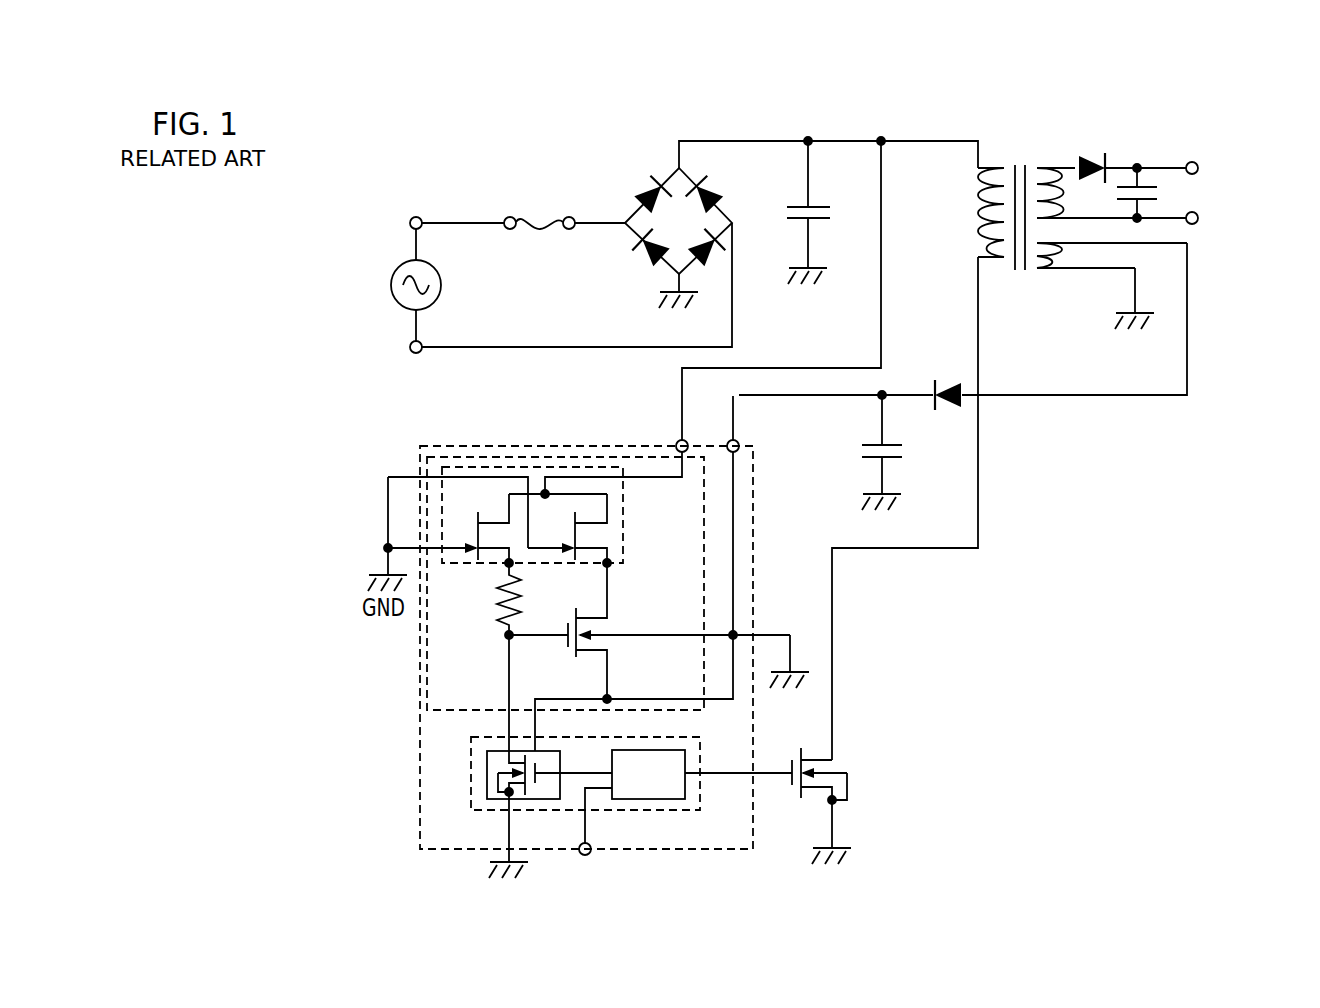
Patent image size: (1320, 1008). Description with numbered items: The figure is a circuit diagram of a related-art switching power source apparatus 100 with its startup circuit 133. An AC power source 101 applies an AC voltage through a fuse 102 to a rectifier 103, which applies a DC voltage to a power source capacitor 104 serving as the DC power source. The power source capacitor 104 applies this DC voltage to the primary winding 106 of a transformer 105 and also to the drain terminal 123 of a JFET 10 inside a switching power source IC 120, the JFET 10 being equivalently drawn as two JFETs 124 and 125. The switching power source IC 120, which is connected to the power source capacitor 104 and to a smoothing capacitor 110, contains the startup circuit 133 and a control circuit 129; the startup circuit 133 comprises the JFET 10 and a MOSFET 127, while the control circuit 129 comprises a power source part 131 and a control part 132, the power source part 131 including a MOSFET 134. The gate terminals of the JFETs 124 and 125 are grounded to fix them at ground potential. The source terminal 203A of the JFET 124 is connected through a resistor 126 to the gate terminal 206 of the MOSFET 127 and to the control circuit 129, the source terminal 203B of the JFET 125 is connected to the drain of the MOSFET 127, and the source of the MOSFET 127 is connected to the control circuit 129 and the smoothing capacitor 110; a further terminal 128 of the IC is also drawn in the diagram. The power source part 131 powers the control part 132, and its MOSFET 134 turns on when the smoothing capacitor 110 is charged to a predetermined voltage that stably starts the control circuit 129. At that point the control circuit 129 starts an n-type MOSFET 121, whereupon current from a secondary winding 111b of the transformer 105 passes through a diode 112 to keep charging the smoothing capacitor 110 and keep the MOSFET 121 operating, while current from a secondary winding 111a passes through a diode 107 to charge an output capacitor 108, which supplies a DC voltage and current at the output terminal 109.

The switching power source apparatus 100 is at (410, 167).
The AC power source 101 is at (442, 279).
The fuse 102 is at (534, 216).
The rectifier 103 is at (640, 185).
The power source capacitor 104 is at (818, 207).
The transformer 105 is at (1012, 165).
The primary winding 106 is at (986, 230).
The diode 107 is at (1090, 160).
The output capacitor 108 is at (1150, 186).
The output terminal 109 is at (1199, 168).
The smoothing capacitor 110 is at (893, 460).
The secondary winding 111a is at (1045, 165).
The secondary winding 111b is at (1045, 270).
The diode 112 is at (948, 382).
The switching power source IC 120 is at (419, 812).
The n-type MOSFET 121 is at (836, 765).
The drain terminal 123 is at (676, 441).
The JFET 124 is at (468, 536).
The JFET 125 is at (595, 528).
The resistor 126 is at (521, 600).
The MOSFET 127 is at (614, 633).
The power supply terminal 128 is at (741, 441).
The control circuit 129 is at (470, 752).
The power source part 131 is at (566, 760).
The control part 132 is at (686, 760).
The startup circuit 133 is at (492, 455).
The MOSFET 134 is at (527, 790).
The source terminal 203A is at (506, 566).
The source terminal 203B is at (612, 567).
The gate terminal 206 is at (511, 639).
The JFET 10 is at (630, 508).